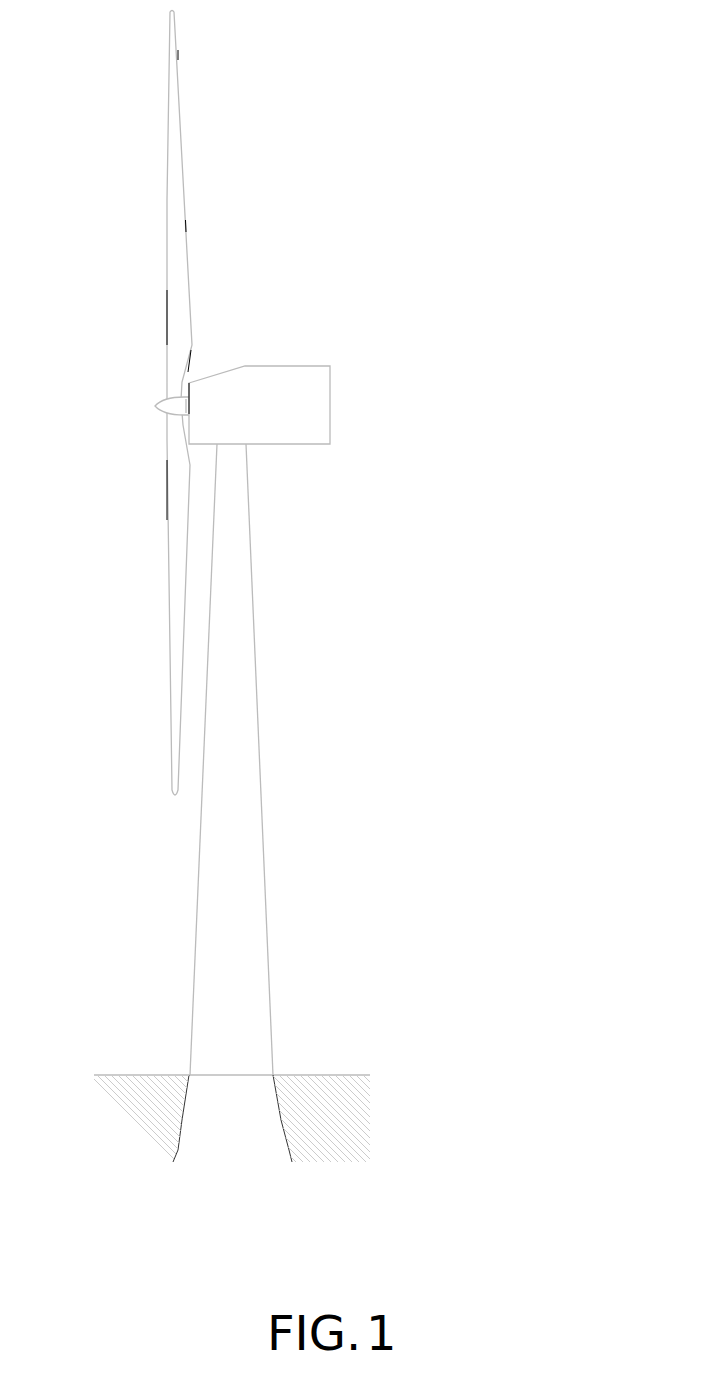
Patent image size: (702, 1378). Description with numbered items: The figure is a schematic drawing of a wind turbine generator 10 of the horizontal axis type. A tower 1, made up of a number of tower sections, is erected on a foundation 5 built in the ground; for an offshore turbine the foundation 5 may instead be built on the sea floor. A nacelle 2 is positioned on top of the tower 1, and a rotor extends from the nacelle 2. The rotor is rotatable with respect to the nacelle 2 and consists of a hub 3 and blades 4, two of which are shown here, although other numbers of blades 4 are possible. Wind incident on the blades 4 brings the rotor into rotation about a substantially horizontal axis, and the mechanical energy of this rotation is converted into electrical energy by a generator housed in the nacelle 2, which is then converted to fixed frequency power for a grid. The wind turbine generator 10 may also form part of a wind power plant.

The wind turbine generator 10 is at (479, 645).
The tower 1 is at (296, 755).
The nacelle 2 is at (343, 399).
The hub 3 is at (141, 398).
The blades 4 is at (138, 199).
The foundation 5 is at (273, 1118).